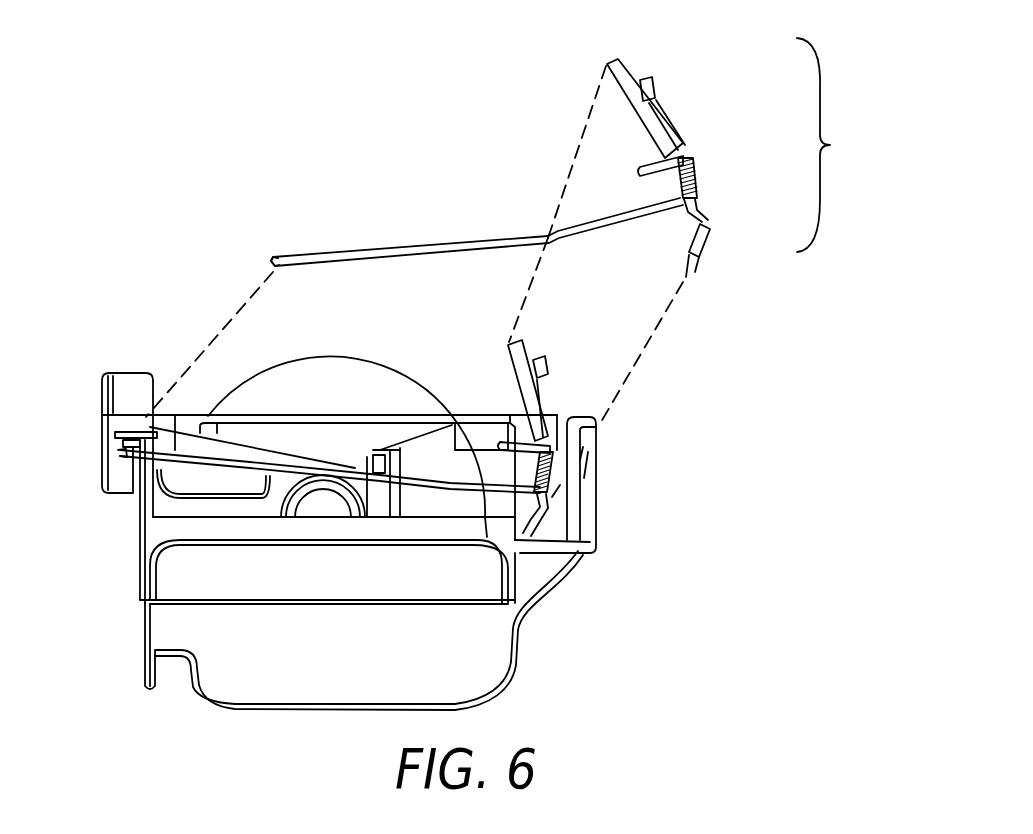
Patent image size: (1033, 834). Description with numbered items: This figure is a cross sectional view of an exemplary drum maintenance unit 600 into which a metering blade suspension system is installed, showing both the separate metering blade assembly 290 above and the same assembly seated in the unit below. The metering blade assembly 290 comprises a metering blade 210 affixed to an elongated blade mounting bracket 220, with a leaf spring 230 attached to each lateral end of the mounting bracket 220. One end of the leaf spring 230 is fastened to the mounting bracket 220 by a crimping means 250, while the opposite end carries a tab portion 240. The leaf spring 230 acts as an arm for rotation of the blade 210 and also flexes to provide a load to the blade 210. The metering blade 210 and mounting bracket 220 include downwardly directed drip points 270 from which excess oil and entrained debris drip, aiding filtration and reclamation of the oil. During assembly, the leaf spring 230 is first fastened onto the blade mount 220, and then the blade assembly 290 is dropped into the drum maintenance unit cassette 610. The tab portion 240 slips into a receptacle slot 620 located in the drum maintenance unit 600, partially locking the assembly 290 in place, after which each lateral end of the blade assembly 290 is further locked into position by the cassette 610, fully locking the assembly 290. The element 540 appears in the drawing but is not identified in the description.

The metering blade 210 is at (618, 63).
The elongated blade mounting bracket 220 is at (656, 106).
The leaf spring 230 is at (556, 240).
The tab portion 240 is at (272, 258).
The crimping means 250 is at (692, 172).
The drip point 270 is at (706, 247).
The metering blade assembly 290 is at (510, 230).
The dome cover 540 is at (378, 376).
The drum maintenance unit 600 is at (365, 671).
The drum maintenance unit cassette 610 is at (150, 528).
The receptacle slot 620 is at (123, 455).